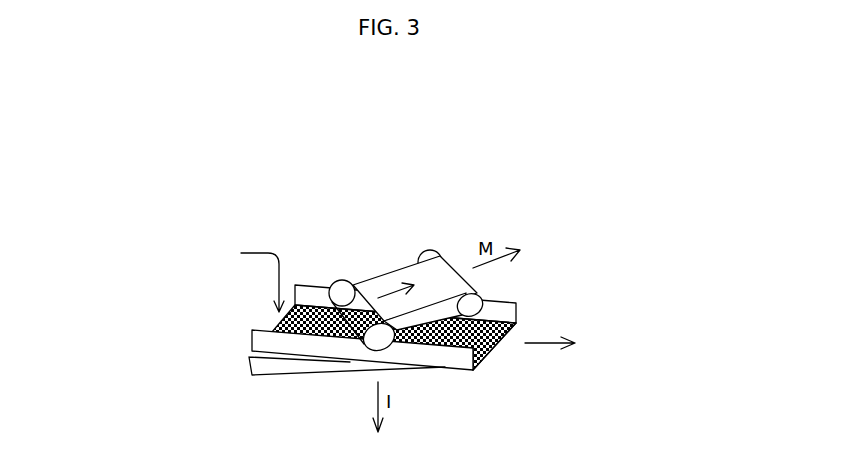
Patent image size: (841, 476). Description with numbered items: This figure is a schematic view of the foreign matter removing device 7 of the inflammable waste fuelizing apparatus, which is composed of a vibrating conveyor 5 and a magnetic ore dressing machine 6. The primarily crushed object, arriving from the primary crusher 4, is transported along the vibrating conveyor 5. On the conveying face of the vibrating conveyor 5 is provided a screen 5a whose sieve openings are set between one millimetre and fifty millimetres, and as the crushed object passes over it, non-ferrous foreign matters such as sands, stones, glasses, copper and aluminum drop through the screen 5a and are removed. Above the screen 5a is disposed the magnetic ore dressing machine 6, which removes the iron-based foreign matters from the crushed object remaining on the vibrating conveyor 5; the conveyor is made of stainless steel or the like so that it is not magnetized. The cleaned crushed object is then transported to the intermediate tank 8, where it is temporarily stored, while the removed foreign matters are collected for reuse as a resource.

The primary crusher 4 is at (160, 273).
The vibrating conveyor 5 is at (333, 349).
The screen 5a is at (491, 350).
The magnetic ore dressing machine 6 is at (387, 278).
The foreign matter removing device 7 is at (450, 188).
The intermediate tank 8 is at (655, 337).